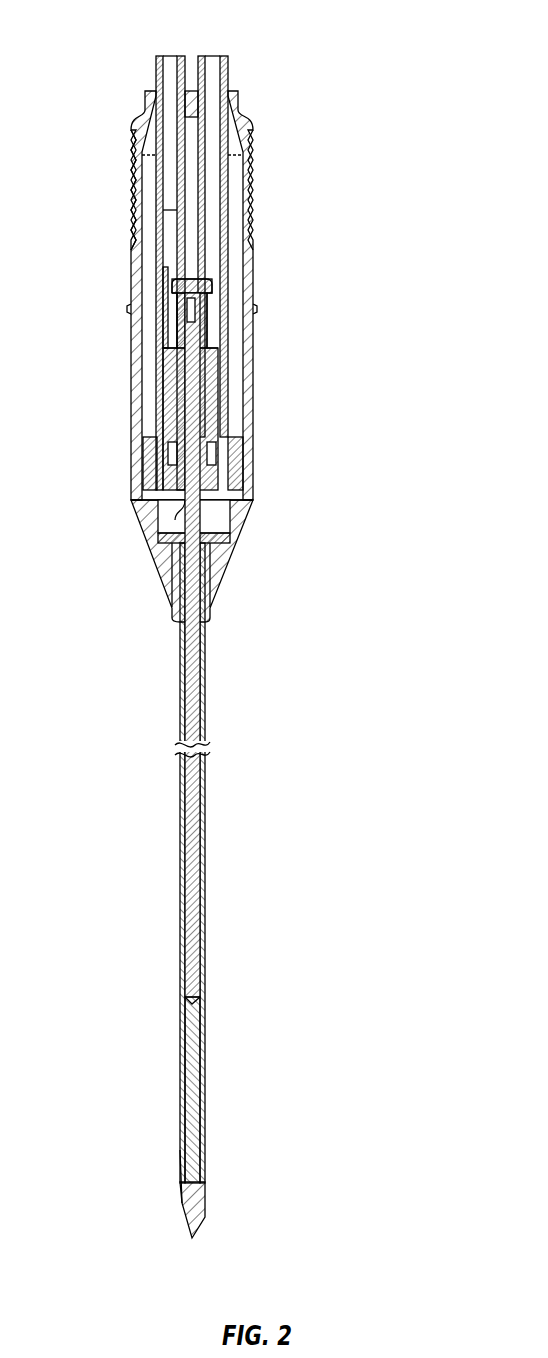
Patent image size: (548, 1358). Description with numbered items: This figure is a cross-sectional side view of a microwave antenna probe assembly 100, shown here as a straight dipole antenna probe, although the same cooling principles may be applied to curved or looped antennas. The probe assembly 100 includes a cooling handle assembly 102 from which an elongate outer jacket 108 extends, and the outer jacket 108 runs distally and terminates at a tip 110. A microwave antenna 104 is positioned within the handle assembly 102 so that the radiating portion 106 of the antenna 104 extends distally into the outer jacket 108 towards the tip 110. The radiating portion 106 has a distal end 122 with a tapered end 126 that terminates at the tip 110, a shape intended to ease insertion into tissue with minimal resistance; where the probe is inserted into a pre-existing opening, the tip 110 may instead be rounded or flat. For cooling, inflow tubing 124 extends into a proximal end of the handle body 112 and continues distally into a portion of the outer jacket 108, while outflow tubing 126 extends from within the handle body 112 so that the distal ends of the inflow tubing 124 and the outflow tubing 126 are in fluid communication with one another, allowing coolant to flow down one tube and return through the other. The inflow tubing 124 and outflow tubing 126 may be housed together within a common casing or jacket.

The microwave antenna probe assembly 100 is at (364, 34).
The cooling handle assembly 102 is at (274, 366).
The microwave antenna 104 is at (203, 511).
The radiating portion 106 is at (204, 1090).
The outer jacket 108 is at (206, 711).
The tip 110 is at (195, 1240).
The handle body 112 is at (131, 190).
The distal end 122 is at (182, 1197).
The inflow tubing 124 is at (156, 65).
The outflow tubing 126 is at (229, 65).